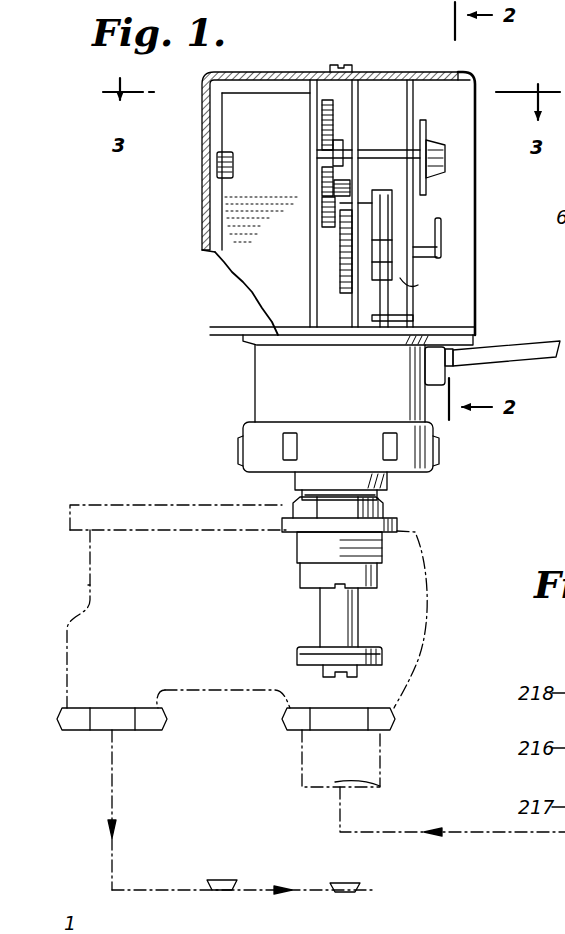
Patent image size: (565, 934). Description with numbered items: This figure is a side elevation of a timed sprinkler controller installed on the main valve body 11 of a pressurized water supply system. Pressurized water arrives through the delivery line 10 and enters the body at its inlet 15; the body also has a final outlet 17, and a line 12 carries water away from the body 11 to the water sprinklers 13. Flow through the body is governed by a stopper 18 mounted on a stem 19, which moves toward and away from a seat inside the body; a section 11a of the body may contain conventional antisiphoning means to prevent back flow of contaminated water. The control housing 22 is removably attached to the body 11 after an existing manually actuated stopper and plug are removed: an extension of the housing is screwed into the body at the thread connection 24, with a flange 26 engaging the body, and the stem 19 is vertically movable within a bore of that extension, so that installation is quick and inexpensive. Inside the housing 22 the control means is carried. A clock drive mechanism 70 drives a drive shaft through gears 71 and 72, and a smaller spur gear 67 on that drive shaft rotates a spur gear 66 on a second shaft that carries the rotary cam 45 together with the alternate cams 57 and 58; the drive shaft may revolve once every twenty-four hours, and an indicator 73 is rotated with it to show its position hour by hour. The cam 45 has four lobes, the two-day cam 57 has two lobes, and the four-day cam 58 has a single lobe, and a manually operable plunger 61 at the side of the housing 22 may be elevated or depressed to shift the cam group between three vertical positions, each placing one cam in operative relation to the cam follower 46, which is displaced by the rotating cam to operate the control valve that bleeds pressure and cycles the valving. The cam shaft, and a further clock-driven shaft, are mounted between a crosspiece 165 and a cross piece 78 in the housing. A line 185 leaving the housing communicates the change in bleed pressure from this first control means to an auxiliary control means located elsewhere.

The pressurized water delivery line 10 is at (382, 767).
The main valve body 11 is at (432, 568).
The body section 11a is at (88, 585).
The line 12 is at (114, 816).
The water sprinklers 13 is at (222, 880).
The inlet 15 is at (400, 718).
The final outlet 17 is at (170, 721).
The stopper 18 is at (380, 656).
The stem 19 is at (330, 620).
The control housing 22 is at (222, 355).
The thread connection 24 is at (297, 548).
The flange 26 is at (398, 524).
The rotary cam 45 is at (367, 274).
The cam follower 46 is at (388, 318).
The cam 57 is at (386, 213).
The cam 58 is at (424, 196).
The manually operable plunger 61 is at (440, 250).
The spur gear 66 is at (346, 264).
The smaller spur gear 67 is at (325, 185).
The clock drive mechanism 70 is at (206, 229).
The gear 71 is at (328, 121).
The gear 72 is at (323, 215).
The indicator 73 is at (428, 131).
The cross piece 78 is at (415, 286).
The crosspiece 165 is at (358, 92).
The line 185 is at (500, 354).